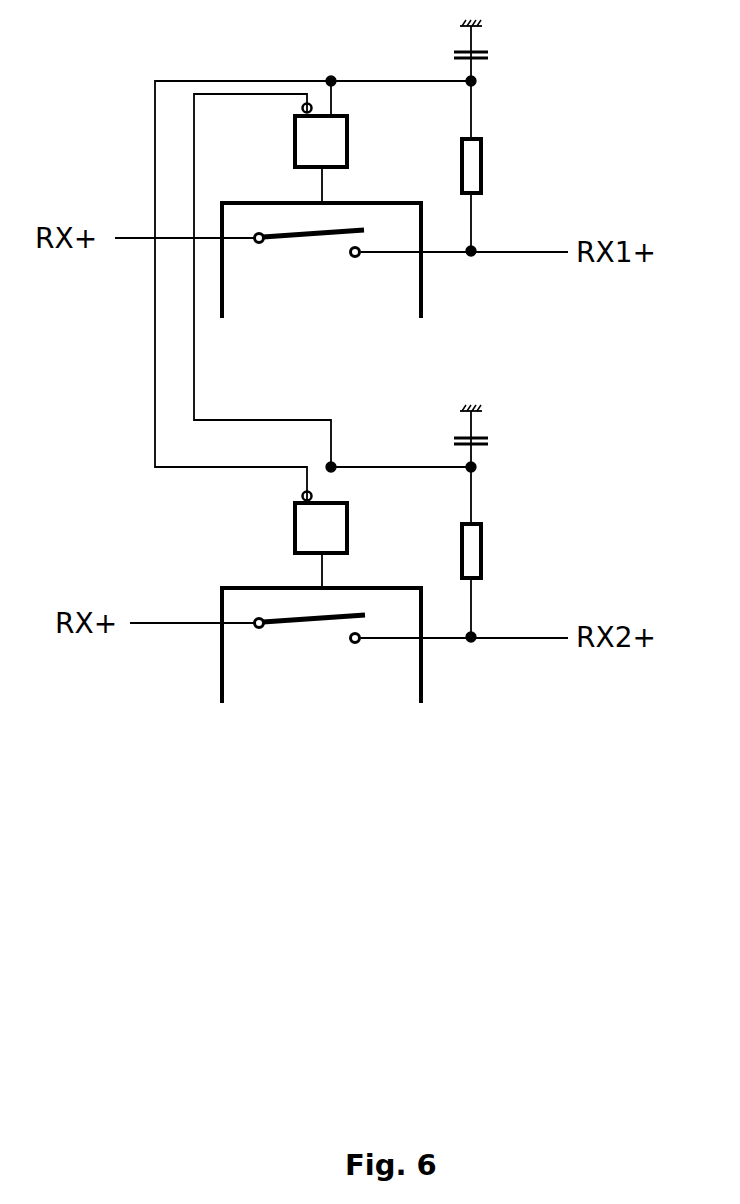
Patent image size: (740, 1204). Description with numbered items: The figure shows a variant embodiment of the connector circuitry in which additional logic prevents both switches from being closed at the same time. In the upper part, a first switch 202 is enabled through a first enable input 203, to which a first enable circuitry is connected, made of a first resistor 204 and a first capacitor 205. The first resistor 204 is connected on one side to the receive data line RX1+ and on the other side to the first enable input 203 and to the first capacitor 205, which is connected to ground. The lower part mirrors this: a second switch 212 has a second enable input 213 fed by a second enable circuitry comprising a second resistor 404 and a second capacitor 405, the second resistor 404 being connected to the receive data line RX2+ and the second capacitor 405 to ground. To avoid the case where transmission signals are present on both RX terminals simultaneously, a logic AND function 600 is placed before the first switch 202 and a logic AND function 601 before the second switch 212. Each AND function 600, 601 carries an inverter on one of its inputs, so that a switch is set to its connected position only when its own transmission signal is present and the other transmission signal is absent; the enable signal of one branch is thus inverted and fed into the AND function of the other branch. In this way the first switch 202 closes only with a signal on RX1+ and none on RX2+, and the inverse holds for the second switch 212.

The first switch 202 is at (291, 314).
The first enable input 203 is at (300, 199).
The first resistor 204 is at (540, 176).
The first capacitor 205 is at (548, 70).
The second switch 212 is at (288, 703).
The second enable input 213 is at (288, 581).
The second resistor 404 is at (540, 561).
The second capacitor 405 is at (548, 454).
The logic AND function 600 is at (400, 154).
The logic AND function 601 is at (400, 541).